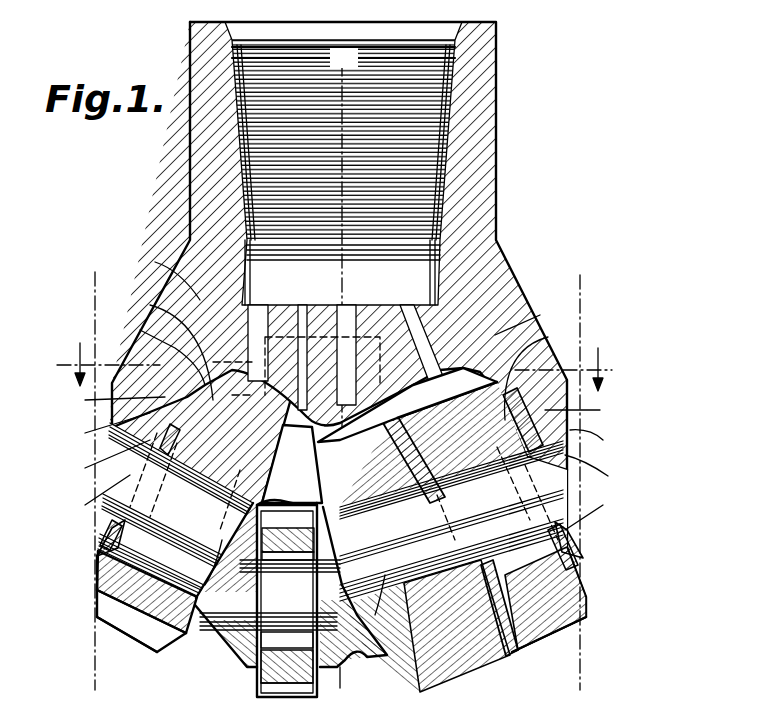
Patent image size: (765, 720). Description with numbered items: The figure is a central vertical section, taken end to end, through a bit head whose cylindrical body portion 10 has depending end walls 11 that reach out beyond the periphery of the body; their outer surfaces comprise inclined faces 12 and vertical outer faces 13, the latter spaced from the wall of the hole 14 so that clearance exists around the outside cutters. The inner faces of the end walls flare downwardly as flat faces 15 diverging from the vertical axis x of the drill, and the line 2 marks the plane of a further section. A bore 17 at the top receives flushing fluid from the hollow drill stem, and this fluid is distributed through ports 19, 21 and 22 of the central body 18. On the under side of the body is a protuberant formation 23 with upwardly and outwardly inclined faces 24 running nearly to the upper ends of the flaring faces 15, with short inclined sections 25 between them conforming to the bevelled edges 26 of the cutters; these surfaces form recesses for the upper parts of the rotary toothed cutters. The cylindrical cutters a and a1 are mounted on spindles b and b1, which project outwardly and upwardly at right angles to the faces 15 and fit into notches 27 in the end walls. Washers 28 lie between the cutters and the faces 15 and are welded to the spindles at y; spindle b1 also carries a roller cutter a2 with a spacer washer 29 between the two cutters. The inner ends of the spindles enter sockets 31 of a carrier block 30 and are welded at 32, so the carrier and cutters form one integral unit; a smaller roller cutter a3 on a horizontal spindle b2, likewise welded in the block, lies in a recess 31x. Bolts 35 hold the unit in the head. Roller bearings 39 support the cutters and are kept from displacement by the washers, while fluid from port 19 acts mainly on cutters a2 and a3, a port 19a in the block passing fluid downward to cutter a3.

The cylindrical body portion 10 is at (207, 176).
The end walls 11 is at (341, 341).
The inclined faces 12 is at (530, 288).
The vertical outer faces 13 is at (344, 432).
The wall of the hole 14 is at (95, 298).
The inner flat faces 15 is at (345, 403).
The bore 17 is at (430, 172).
The central body 18 is at (350, 340).
The port 19 is at (313, 335).
The port 19a is at (297, 503).
The section line 2- 2 is at (334, 367).
The port 21 is at (258, 340).
The port 22 is at (418, 322).
The protuberant formation 23 is at (407, 420).
The inclined faces 24 is at (329, 394).
The short inclined sections 25 is at (349, 353).
The bevelled edges 26 is at (95, 603).
The notches or recesses 27 is at (347, 465).
The washers 28 is at (105, 540).
The spacer washer 29 is at (518, 650).
The carrier block 30 is at (243, 657).
The sockets 31 is at (375, 672).
The recess 31x is at (262, 670).
The welds 32 is at (300, 565).
The bolts 35 is at (445, 300).
The roller bearings 39 is at (167, 560).
The cutter a is at (130, 587).
The cutter a1 is at (540, 585).
The roller cutter a2 is at (458, 630).
The roller cutter a3 is at (293, 673).
The spindle b is at (175, 510).
The spindle b1 is at (507, 572).
The spindle b2 is at (270, 579).
The vertical axis x is at (344, 377).
The weld y is at (342, 502).